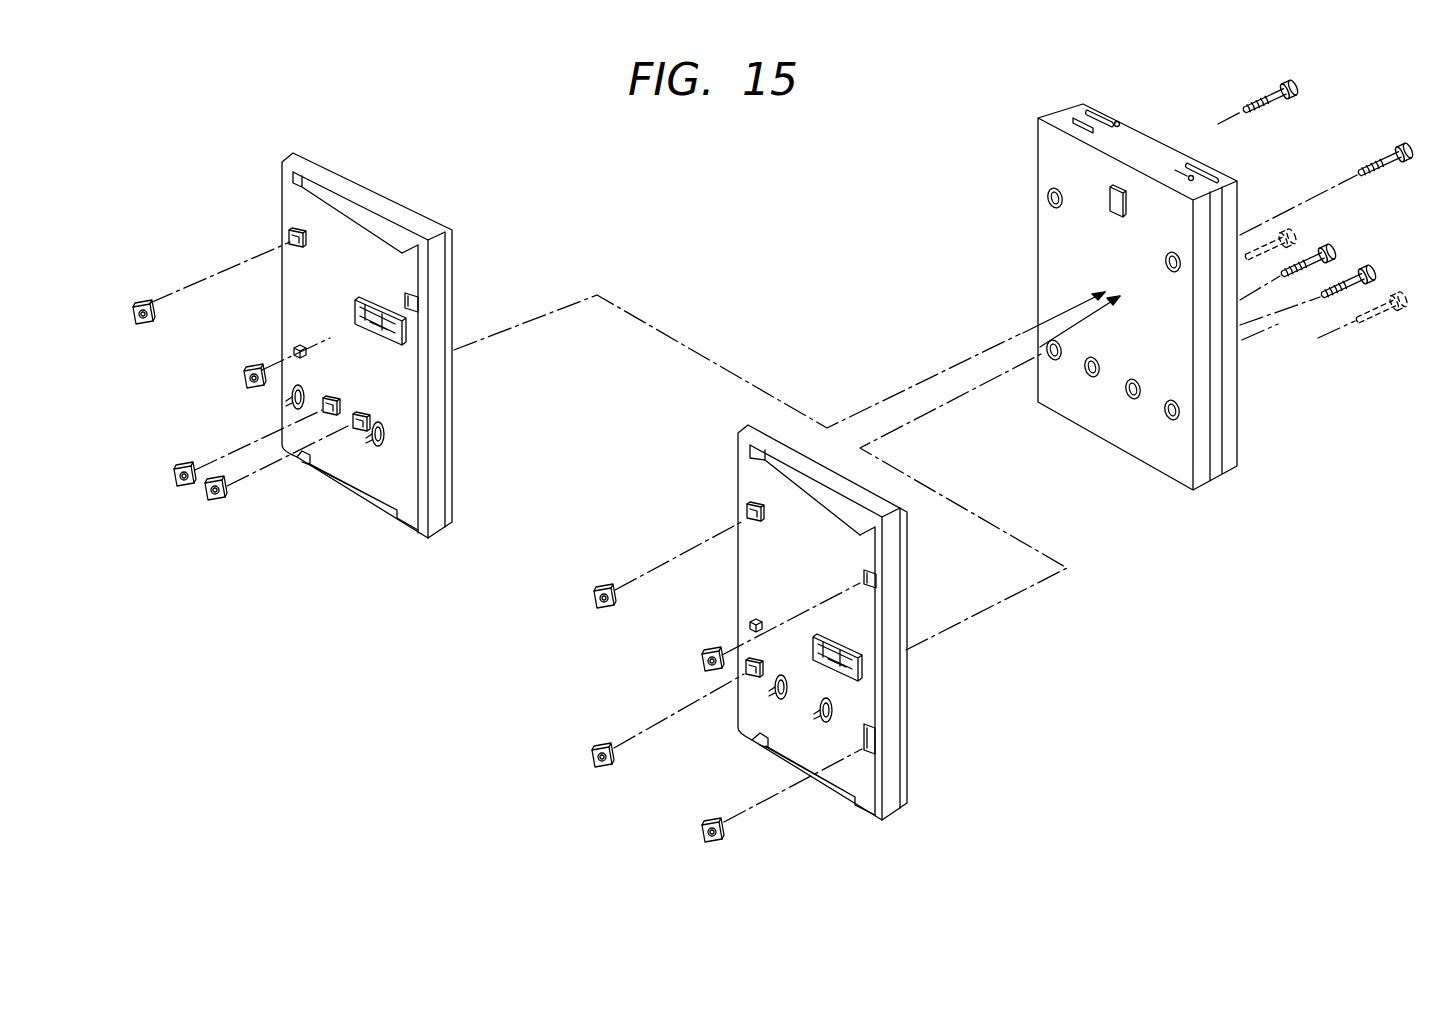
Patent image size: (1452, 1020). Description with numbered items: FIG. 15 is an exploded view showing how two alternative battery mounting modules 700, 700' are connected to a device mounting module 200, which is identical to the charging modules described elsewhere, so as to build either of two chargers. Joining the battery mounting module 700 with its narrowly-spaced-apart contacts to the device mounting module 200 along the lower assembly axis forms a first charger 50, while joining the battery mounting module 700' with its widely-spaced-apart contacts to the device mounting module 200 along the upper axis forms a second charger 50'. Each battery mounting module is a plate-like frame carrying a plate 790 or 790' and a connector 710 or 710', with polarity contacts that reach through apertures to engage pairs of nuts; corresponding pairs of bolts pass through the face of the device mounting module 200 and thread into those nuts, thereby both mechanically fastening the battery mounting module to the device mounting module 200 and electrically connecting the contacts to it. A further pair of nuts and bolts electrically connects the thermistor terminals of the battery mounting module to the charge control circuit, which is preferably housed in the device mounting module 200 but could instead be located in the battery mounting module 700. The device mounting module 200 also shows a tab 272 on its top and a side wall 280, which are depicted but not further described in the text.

The battery mounting module 700' is at (367, 325).
The battery mounting module 700 is at (822, 588).
The plate 790' is at (270, 294).
The plate 790 is at (710, 599).
The connector 710' is at (381, 342).
The connector 710 is at (891, 663).
The second charger 50' is at (737, 352).
The first charger 50 is at (982, 501).
The device mounting module 200 is at (1215, 77).
The tab 272 is at (1110, 185).
The housing side 280 is at (1238, 438).